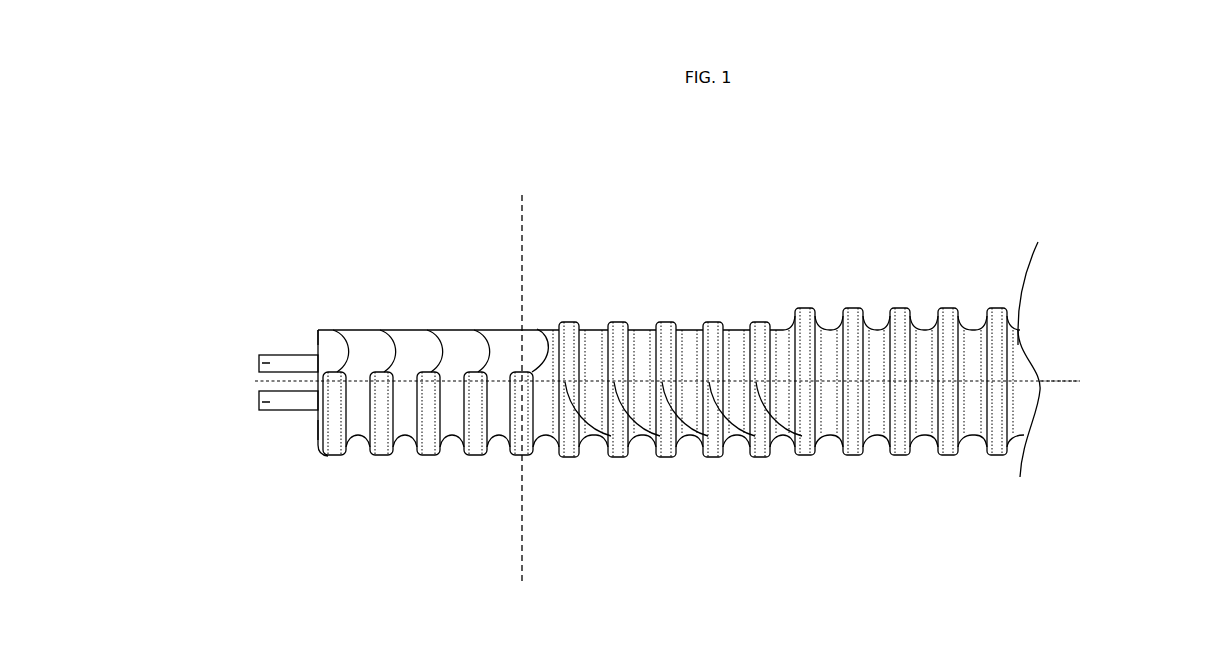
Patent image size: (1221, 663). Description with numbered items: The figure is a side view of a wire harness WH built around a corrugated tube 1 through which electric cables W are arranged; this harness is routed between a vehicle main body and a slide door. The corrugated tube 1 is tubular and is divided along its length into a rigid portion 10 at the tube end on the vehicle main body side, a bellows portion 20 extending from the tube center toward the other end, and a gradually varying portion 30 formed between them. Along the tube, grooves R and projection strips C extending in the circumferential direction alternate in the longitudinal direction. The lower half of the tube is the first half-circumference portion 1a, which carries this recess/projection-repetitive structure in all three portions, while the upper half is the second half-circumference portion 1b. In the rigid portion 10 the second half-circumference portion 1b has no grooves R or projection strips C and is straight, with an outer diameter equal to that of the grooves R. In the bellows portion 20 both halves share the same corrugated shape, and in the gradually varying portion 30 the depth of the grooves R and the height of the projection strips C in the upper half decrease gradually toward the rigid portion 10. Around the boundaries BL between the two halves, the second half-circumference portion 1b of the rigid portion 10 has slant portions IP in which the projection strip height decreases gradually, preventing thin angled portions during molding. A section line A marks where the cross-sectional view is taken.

The corrugated tube 1 is at (667, 380).
The first half-circumference portion 1a is at (313, 427).
The second half-circumference portion 1b is at (313, 338).
The electric cables W is at (256, 364).
The wire harness WH is at (959, 211).
The boundaries BL is at (1062, 380).
The slant portions IP is at (333, 329).
The projection strips C is at (569, 322).
The grooves R is at (594, 330).
The rigid portion 10 is at (318, 523).
The gradually varying portion 30 is at (555, 517).
The bellows portion 20 is at (788, 517).
The line A- A is at (528, 208).